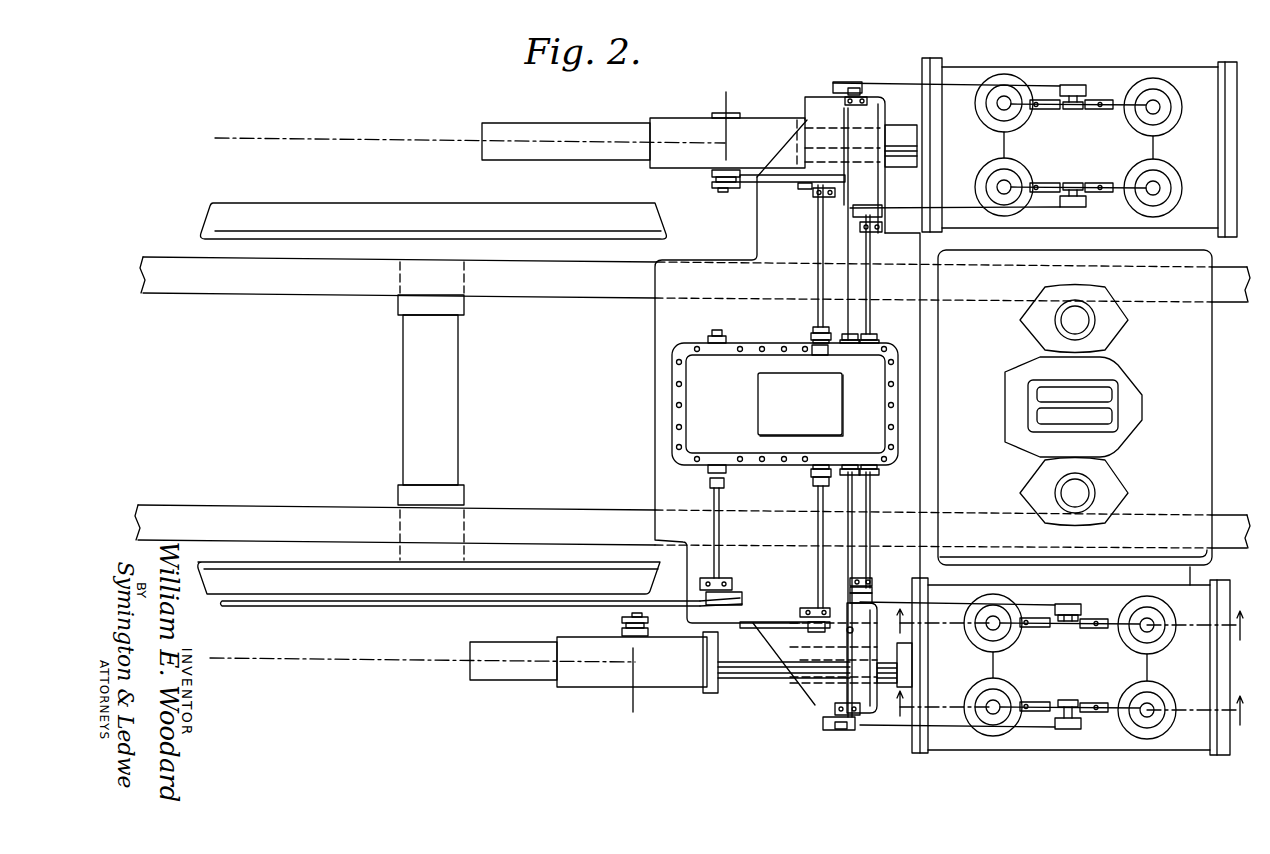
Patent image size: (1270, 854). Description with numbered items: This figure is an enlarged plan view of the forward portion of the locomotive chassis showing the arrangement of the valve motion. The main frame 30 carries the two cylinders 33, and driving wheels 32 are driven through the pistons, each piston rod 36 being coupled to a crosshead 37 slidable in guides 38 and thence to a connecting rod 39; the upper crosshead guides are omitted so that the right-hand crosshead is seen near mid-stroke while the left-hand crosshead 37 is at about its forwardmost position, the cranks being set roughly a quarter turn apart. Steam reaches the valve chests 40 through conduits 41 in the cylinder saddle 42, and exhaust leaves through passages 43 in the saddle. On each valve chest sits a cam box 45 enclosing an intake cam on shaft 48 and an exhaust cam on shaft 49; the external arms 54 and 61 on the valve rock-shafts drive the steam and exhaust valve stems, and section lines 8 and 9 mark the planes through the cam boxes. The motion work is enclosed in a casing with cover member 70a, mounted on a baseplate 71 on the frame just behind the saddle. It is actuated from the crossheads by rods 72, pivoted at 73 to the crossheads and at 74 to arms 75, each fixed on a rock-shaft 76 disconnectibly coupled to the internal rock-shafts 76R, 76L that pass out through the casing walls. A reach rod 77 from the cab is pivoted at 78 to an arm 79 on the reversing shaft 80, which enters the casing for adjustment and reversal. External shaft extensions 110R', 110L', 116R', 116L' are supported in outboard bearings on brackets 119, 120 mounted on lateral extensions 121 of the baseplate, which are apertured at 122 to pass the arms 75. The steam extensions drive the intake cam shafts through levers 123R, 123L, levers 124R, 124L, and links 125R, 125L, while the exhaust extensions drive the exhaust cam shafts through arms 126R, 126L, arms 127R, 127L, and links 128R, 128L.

The section line 8- 8 is at (1063, 637).
The section line 9- 9 is at (1063, 720).
The main frame 30 is at (519, 518).
The driving wheels 32 is at (218, 585).
The cylinders 33 is at (1178, 67).
The piston rod 36 is at (748, 665).
The crosshead 37 is at (678, 120).
The guides 38 is at (522, 675).
The connecting rod 39 is at (358, 660).
The valve chests 40 is at (1073, 406).
The conduits 41 is at (1098, 322).
The cylinder saddle 42 is at (1075, 407).
The passages 43 is at (1036, 414).
The cam box 45 is at (1073, 406).
The intake cam shaft 48 is at (1082, 200).
The exhaust cam shaft 49 is at (1084, 104).
The external arms 54 is at (1067, 405).
The external arms 61 is at (1066, 406).
The cover member 70a is at (785, 397).
The baseplate 71 is at (663, 378).
The rods or links 72 is at (750, 182).
The pivotal coupling 73 is at (720, 192).
The pivotal coupling 74 is at (901, 406).
The arms 75 is at (846, 185).
The rock-shaft 76 is at (818, 279).
The internal left rock-shaft 76L is at (812, 338).
The internal right rock-shaft 76R is at (812, 476).
The reach rod 77 is at (418, 608).
The pivotal coupling 78 is at (742, 596).
The arm 79 is at (726, 570).
The reversing shaft 80 is at (712, 527).
The left steam valve actuating rock-shaft extension 110L' is at (882, 329).
The right steam valve actuating rock-shaft extension 110R' is at (881, 488).
The left exhaust valve actuating rock-shaft extension 116L' is at (840, 145).
The right exhaust valve actuating rock-shaft extension 116R' is at (833, 662).
The bracket 119 is at (875, 218).
The bracket 120 is at (853, 718).
The lateral extensions 121 is at (810, 112).
The apertures 122 is at (802, 189).
The left lever 123L is at (880, 216).
The right lever 123R is at (873, 590).
The left lever 124L is at (1076, 207).
The right lever 124R is at (1068, 604).
The left link 125L is at (968, 212).
The right link 125R is at (960, 603).
The left arm 126L is at (849, 92).
The right arm 126R is at (835, 725).
The left arm 127L is at (1075, 86).
The right arm 127R is at (1065, 730).
The left link 128L is at (962, 83).
The right link 128R is at (950, 727).